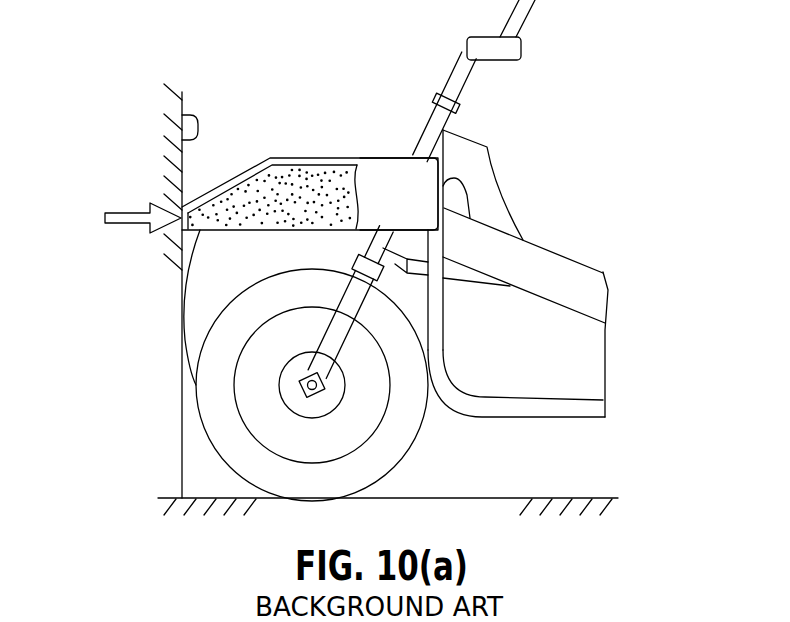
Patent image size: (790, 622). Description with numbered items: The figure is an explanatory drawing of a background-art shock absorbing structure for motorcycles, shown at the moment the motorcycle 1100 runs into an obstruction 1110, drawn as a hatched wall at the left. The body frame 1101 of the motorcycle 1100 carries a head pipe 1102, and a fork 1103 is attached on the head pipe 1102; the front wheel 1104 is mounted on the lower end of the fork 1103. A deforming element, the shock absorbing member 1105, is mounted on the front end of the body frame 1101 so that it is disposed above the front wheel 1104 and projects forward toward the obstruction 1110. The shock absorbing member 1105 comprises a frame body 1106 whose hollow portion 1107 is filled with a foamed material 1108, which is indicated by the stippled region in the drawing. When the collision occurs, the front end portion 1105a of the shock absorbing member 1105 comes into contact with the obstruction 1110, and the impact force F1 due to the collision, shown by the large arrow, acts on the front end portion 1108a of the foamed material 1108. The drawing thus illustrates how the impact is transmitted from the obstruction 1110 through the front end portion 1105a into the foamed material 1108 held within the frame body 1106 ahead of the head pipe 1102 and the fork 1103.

The motorcycle 1100 is at (557, 58).
The body frame 1101 is at (537, 263).
The head pipe 1102 is at (440, 118).
The fork 1103 is at (357, 303).
The front wheel 1104 is at (402, 442).
The shock absorbing member 1105 is at (347, 150).
The front end portion of the shock absorbing member 1105a is at (177, 223).
The frame body 1106 is at (295, 157).
The hollow portion 1107 is at (280, 197).
The foamed material 1108 is at (252, 167).
The front end portion of the foamed material 1108a is at (181, 303).
The obstruction 1110 is at (164, 114).
The impact force F1 is at (135, 203).